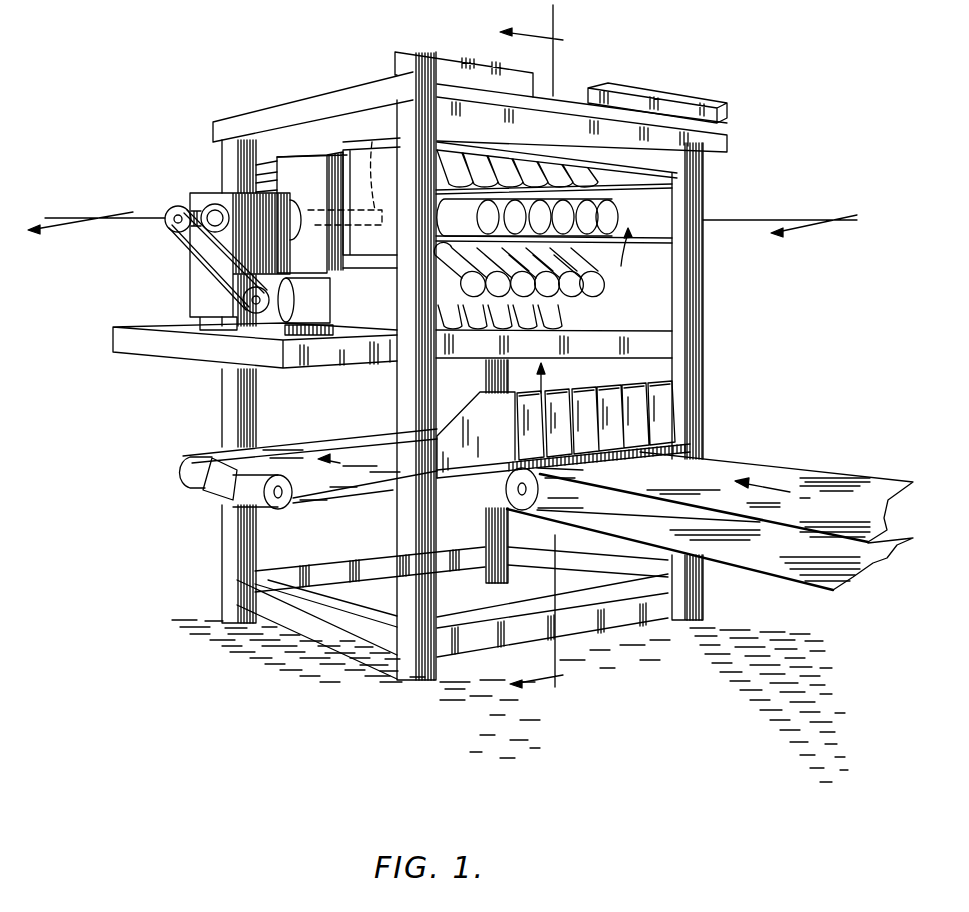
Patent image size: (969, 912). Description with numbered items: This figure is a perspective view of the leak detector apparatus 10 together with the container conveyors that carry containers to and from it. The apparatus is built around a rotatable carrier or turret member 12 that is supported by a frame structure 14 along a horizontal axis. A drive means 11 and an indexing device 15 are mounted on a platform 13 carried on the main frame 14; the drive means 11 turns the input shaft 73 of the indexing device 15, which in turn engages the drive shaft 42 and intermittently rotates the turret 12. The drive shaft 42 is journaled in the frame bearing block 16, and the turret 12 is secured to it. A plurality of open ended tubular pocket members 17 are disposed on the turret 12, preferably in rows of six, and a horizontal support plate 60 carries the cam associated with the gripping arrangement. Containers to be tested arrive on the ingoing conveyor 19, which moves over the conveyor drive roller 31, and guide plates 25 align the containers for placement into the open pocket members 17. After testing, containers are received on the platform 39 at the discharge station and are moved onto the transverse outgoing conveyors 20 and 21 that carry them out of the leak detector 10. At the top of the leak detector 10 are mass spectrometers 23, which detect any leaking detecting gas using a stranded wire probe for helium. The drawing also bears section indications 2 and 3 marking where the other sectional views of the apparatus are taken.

The leak detector apparatus 10 is at (470, 366).
The drive means 11 is at (297, 303).
The turret member 12 is at (577, 307).
The platform 13 is at (207, 347).
The frame structure 14 is at (695, 190).
The indexing device 15 is at (222, 200).
The frame bearing block 16 is at (327, 157).
The open ended tubular pocket members 17 is at (548, 185).
The ingoing conveyor 19 is at (800, 473).
The outgoing conveyor 20 is at (177, 463).
The outgoing conveyor 21 is at (327, 492).
The mass spectrometers 23 is at (425, 57).
The guide plates 25 is at (645, 415).
The conveyor drive roller 31 is at (563, 497).
The platform 39 is at (203, 490).
The drive shaft 42 is at (338, 194).
The horizontal support plate 60 is at (580, 189).
The input shaft 73 is at (203, 210).
The section line 2- 2 is at (520, 361).
The section line 3- 3 is at (437, 237).